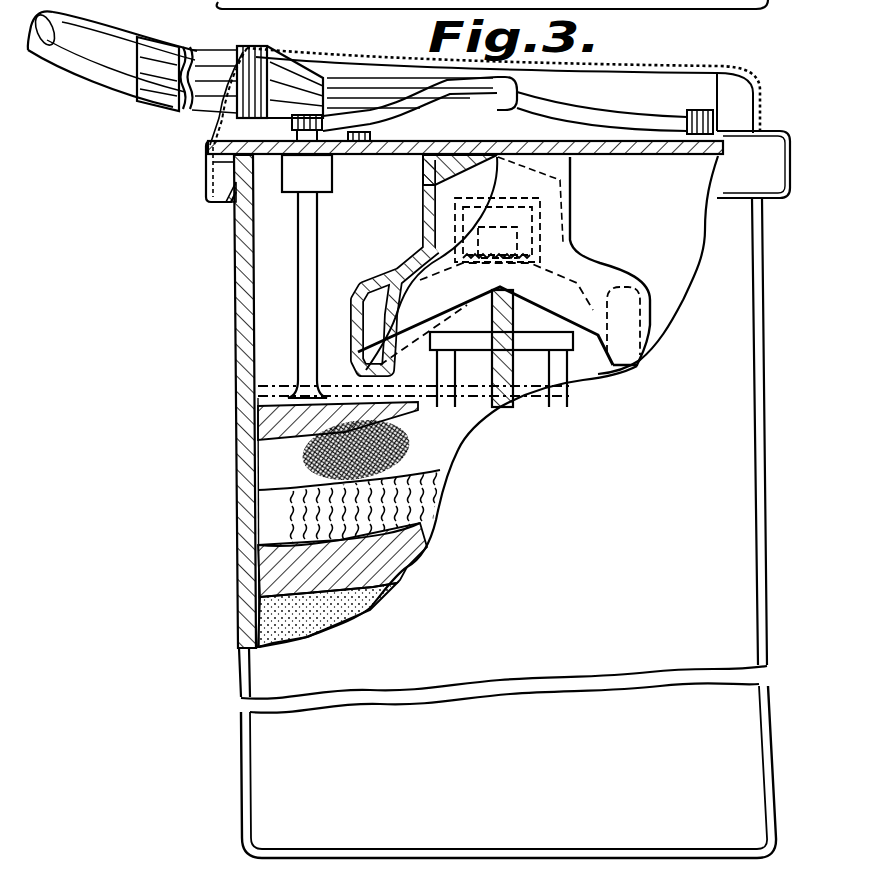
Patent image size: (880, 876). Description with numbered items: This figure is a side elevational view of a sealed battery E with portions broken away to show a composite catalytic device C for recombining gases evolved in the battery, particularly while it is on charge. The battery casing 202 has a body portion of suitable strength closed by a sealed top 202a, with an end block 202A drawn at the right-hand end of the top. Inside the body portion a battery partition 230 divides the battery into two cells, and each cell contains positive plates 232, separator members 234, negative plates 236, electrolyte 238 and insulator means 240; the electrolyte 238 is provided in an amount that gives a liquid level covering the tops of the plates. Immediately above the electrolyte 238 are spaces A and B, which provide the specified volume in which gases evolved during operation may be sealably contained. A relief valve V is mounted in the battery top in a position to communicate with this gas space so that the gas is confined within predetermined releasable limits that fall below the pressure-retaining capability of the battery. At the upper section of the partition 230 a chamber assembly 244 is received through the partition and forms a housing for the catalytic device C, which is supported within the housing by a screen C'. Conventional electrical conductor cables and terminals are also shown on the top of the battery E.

The battery casing 202 is at (725, 312).
The lid end block / flange 202A is at (747, 145).
The sealed top 202a is at (657, 154).
The chamber assembly 244 is at (420, 0).
The battery partition 230 is at (498, 289).
The positive plates 232 is at (275, 470).
The separator members 234 is at (275, 525).
The negative plates 236 is at (280, 567).
The electrolyte 238 is at (262, 387).
The insulator means 240 is at (273, 613).
The battery E is at (228, 270).
The gas space A is at (369, 255).
The gas space B is at (635, 250).
The composite catalytic device C is at (532, 230).
The screen C' is at (496, 293).
The relief valve V is at (364, 153).